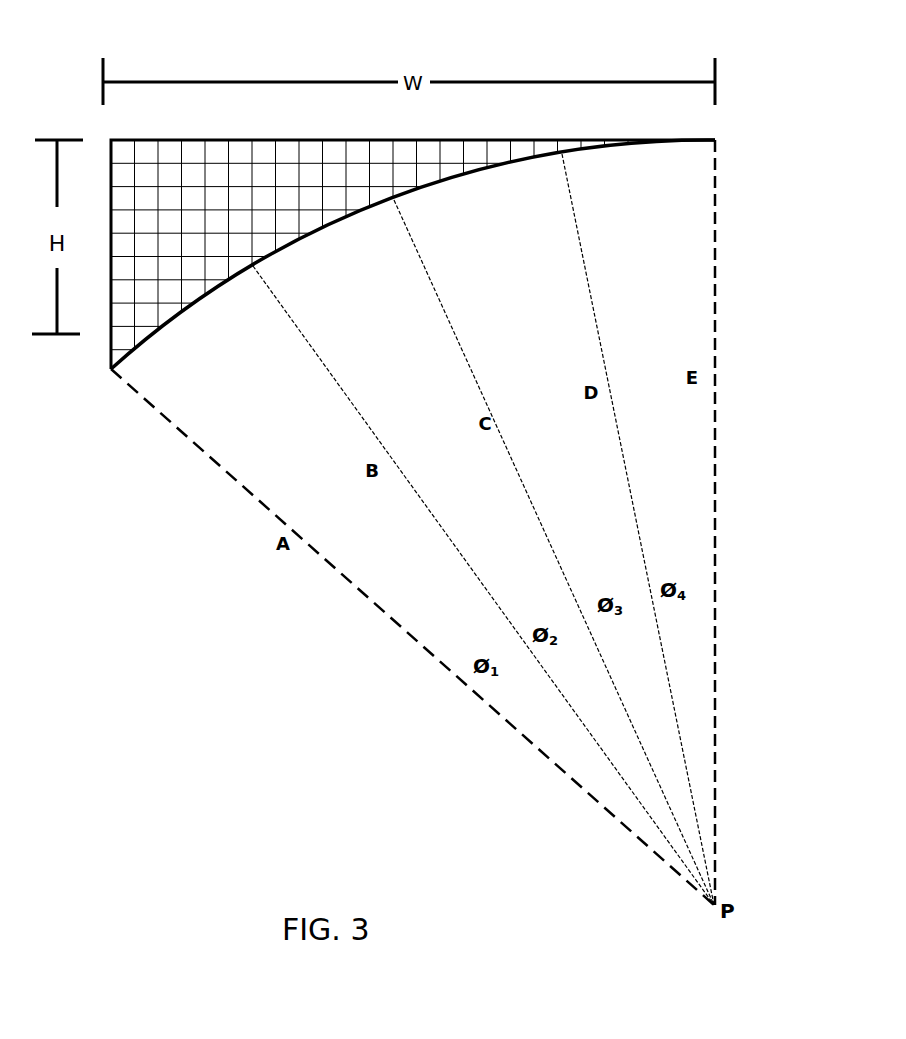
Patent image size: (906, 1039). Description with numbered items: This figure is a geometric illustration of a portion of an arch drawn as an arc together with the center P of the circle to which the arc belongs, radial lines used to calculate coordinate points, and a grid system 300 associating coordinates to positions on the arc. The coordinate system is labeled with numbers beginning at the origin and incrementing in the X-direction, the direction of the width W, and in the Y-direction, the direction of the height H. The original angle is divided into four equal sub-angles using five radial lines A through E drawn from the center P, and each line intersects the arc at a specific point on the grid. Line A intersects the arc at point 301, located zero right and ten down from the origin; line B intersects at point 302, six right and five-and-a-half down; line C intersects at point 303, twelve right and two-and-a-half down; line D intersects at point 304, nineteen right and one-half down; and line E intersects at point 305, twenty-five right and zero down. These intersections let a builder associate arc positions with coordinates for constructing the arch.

The grid chart of stepper motor acceleration profile 300 is at (111, 140).
The point 301 is at (116, 366).
The point 302 is at (255, 264).
The point 303 is at (396, 202).
The point 304 is at (563, 157).
The point 305 is at (715, 140).